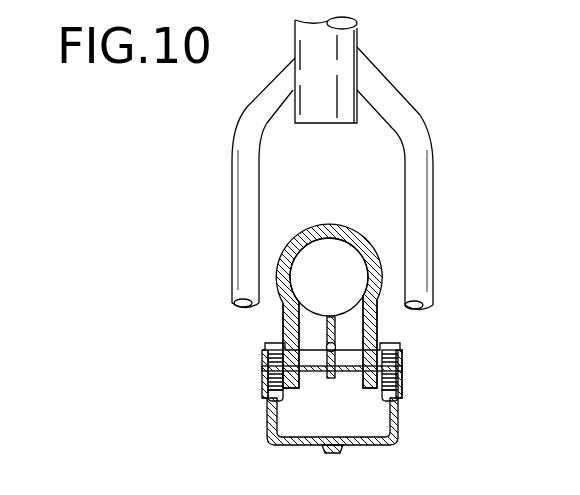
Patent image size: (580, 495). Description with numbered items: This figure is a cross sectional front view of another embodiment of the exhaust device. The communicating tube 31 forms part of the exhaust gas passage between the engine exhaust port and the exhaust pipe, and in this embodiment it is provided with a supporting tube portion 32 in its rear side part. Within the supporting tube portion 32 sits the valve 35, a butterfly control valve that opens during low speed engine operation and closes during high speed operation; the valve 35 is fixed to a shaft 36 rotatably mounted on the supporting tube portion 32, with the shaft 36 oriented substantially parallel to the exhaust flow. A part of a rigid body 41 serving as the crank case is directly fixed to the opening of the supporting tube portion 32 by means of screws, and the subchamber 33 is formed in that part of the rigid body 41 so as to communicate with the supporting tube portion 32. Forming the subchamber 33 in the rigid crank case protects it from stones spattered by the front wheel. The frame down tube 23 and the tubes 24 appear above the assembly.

The down tube 23 is at (357, 46).
The branch tubes 24 is at (232, 240).
The communicating tube 31 is at (331, 225).
The supporting tube portion 32 is at (377, 327).
The subchamber 33 is at (284, 429).
The valve 35 is at (333, 379).
The shaft 36 is at (340, 349).
The rigid body 41 is at (402, 432).